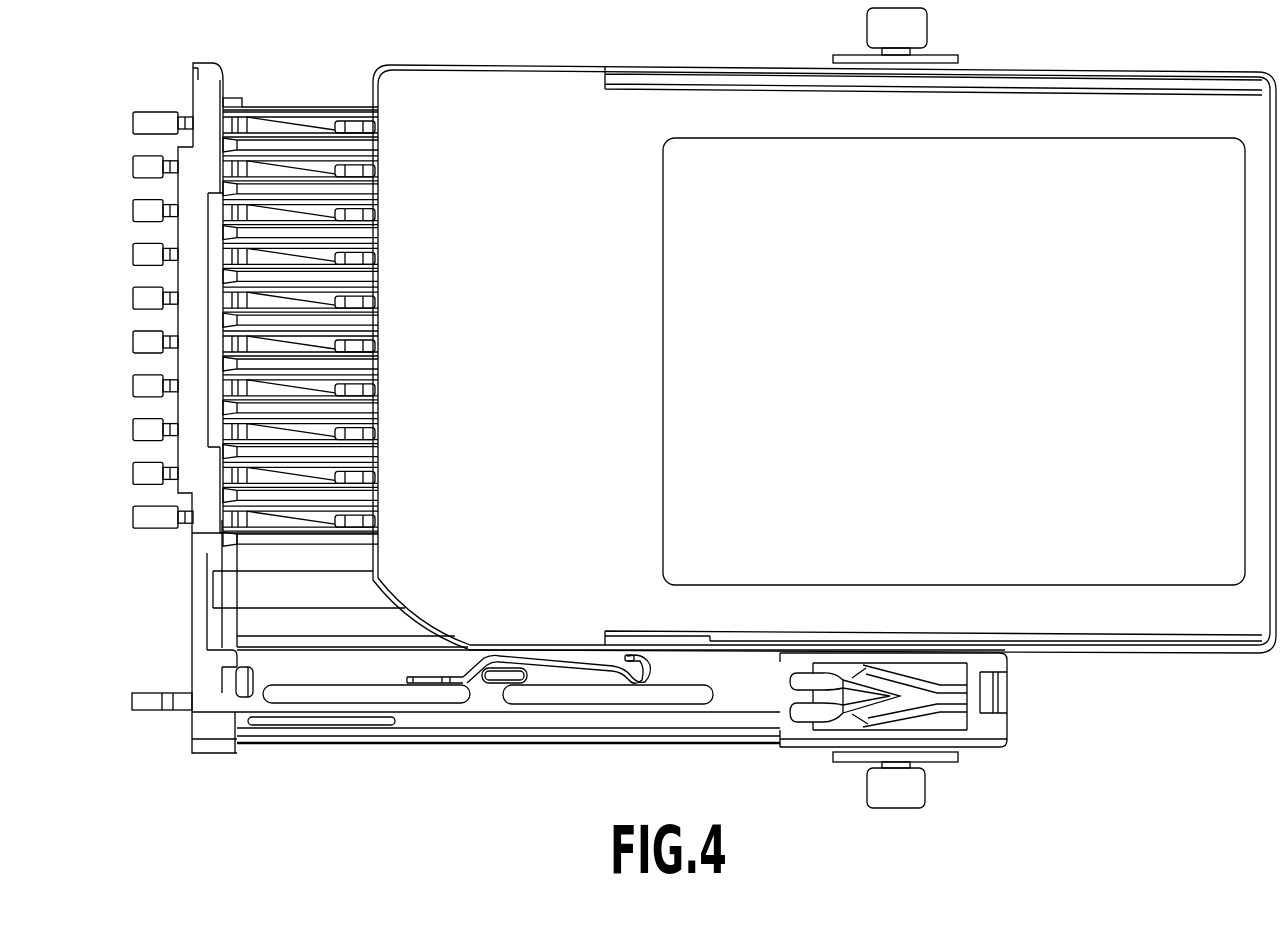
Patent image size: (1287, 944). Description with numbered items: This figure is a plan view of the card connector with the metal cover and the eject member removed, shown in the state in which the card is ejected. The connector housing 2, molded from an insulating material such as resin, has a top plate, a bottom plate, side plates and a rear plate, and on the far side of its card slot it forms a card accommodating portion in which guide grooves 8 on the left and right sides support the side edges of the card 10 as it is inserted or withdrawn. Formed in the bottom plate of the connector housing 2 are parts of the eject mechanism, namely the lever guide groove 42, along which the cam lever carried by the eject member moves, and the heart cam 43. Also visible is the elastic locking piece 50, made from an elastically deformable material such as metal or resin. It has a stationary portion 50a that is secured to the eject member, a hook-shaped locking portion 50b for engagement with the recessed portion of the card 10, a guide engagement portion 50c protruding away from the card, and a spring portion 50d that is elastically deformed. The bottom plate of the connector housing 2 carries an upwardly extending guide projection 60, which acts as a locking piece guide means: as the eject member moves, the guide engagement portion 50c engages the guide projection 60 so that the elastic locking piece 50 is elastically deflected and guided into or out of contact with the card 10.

The connector housing 2 is at (270, 552).
The guide grooves 8 is at (427, 647).
The card 10 is at (1050, 115).
The lever guide groove 42 is at (880, 680).
The heart cam 43 is at (853, 695).
The elastic locking piece 50 is at (546, 660).
The stationary portion 50a is at (455, 680).
The locking portion 50b is at (640, 655).
The guide engagement portion 50c is at (633, 684).
The spring portion 50d is at (570, 643).
The guide projection 60 is at (500, 684).